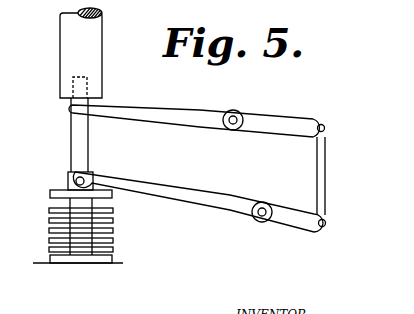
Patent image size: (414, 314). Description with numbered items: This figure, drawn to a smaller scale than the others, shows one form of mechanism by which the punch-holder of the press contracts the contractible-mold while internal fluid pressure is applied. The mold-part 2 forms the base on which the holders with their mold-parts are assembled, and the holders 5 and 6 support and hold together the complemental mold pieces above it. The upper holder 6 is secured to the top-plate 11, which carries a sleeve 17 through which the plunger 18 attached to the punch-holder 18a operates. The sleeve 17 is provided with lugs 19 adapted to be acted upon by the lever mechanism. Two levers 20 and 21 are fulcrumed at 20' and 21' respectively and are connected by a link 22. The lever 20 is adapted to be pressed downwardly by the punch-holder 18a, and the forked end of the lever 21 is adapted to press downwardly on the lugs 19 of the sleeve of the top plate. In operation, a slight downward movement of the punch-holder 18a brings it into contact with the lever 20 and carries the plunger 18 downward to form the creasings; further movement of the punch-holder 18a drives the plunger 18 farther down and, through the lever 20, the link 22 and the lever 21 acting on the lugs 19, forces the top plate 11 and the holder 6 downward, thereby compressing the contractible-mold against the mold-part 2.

The mold-part 2 is at (79, 261).
The holder 5 is at (49, 221).
The holder 6 is at (50, 198).
The top-plate 11 is at (50, 191).
The sleeve 17 is at (72, 178).
The plunger 18 is at (83, 135).
The punch-holder 18a is at (95, 29).
The lugs 19 is at (88, 175).
The lever 20 is at (197, 133).
The fulcrum 20' is at (254, 107).
The lever 21 is at (199, 212).
The fulcrum 21' is at (273, 196).
The link 22 is at (321, 170).